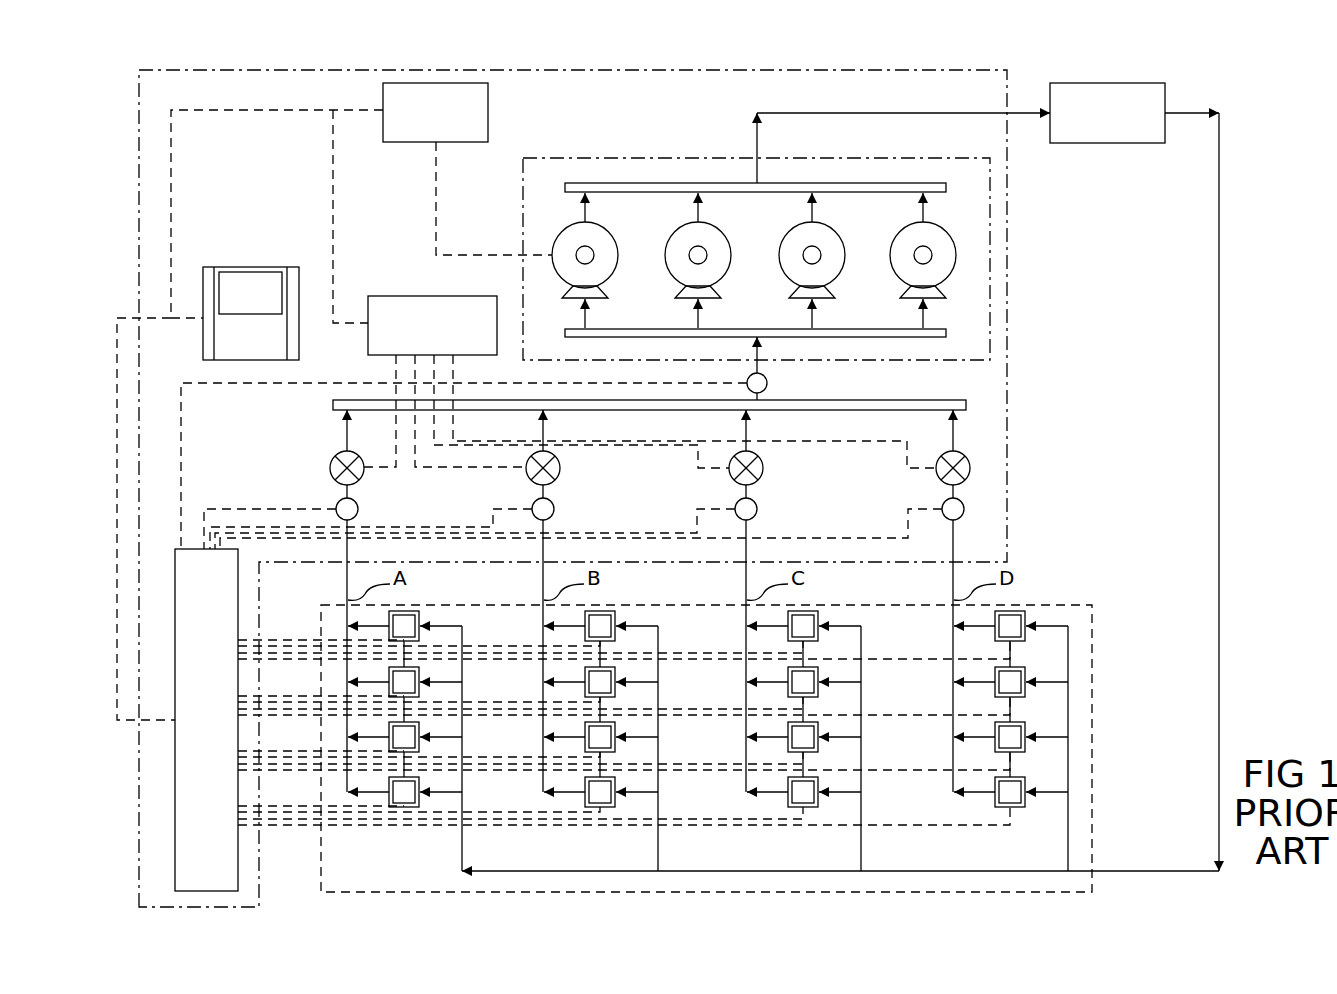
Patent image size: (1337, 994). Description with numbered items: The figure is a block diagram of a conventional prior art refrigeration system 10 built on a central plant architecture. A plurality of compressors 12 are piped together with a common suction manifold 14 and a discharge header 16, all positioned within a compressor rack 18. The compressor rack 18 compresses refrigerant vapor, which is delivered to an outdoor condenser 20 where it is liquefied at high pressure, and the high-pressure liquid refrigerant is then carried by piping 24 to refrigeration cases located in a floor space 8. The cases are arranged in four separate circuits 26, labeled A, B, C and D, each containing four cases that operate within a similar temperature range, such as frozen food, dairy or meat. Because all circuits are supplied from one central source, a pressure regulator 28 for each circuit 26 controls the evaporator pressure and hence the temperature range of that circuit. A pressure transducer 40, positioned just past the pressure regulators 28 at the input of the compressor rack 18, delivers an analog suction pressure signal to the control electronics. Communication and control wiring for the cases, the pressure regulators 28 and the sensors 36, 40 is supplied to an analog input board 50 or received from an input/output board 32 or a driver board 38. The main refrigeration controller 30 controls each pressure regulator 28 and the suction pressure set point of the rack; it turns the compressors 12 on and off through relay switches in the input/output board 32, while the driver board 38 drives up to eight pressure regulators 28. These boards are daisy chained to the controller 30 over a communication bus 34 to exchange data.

The floor space 8 is at (770, 748).
The refrigeration system 10 is at (1230, 60).
The compressors 12 is at (950, 237).
The common suction manifold 14 is at (933, 326).
The discharge header 16 is at (640, 183).
The compressor rack 18 is at (990, 336).
The condenser 20 is at (1118, 88).
The piping 24 is at (1219, 360).
The circuits 26 is at (1050, 657).
The pressure regulator 28 is at (333, 460).
The main refrigeration controller 30 is at (251, 267).
The input/output board 32 is at (433, 83).
The communication bus 34 is at (245, 110).
The sensors 36 is at (336, 506).
The driver board 38 is at (400, 296).
The pressure transducer 40 is at (767, 383).
The analog input board 50 is at (228, 862).